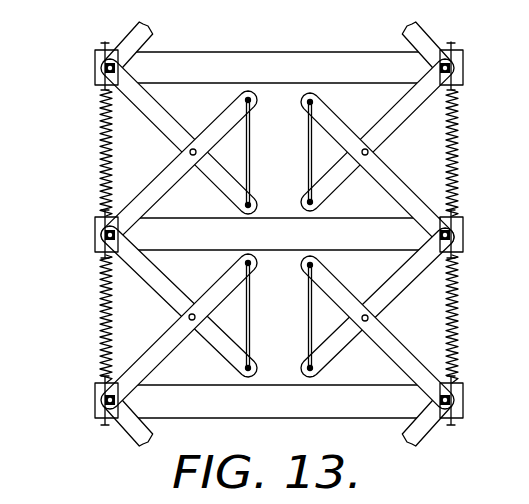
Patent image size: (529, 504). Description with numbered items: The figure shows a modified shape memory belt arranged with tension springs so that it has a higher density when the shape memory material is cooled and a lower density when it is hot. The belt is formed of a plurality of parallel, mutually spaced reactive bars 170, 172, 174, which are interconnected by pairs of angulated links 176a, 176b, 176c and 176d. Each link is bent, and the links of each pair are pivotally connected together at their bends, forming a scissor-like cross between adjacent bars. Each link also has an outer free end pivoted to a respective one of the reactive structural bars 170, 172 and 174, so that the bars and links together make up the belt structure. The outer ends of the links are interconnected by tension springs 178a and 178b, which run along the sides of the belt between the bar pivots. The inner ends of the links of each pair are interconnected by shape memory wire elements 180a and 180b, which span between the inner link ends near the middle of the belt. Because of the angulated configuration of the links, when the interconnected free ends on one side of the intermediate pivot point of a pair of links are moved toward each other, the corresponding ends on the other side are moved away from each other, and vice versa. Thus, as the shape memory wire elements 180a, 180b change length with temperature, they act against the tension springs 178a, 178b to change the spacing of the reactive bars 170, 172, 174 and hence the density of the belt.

The reactive bar 170 is at (271, 53).
The reactive bar 172 is at (273, 251).
The reactive bar 174 is at (284, 388).
The angulated link 176a is at (179, 136).
The angulated link 176b is at (147, 203).
The angulated link 176c is at (408, 118).
The angulated link 176d is at (402, 201).
The tension spring 178a is at (100, 121).
The tension spring 178b is at (458, 123).
The shape memory wire element 180a is at (249, 124).
The shape memory wire element 180b is at (307, 161).